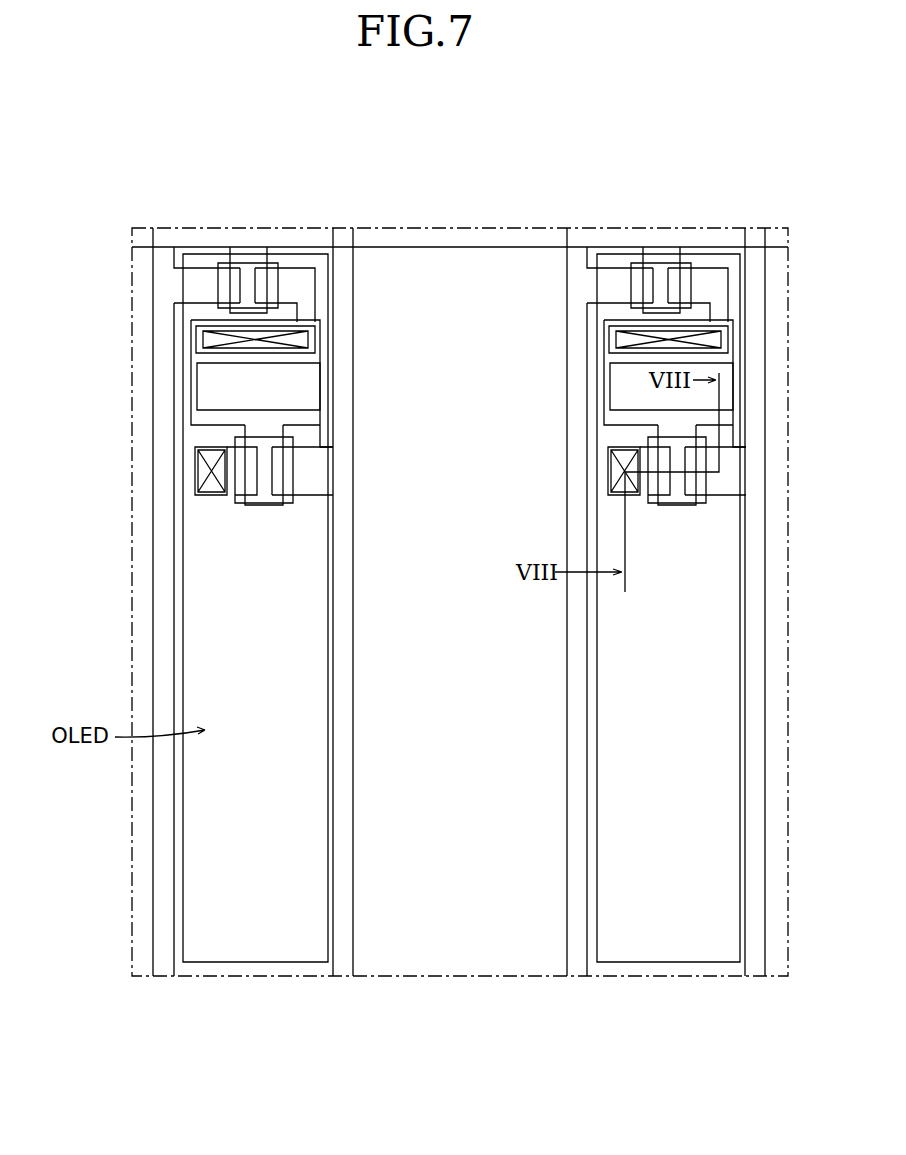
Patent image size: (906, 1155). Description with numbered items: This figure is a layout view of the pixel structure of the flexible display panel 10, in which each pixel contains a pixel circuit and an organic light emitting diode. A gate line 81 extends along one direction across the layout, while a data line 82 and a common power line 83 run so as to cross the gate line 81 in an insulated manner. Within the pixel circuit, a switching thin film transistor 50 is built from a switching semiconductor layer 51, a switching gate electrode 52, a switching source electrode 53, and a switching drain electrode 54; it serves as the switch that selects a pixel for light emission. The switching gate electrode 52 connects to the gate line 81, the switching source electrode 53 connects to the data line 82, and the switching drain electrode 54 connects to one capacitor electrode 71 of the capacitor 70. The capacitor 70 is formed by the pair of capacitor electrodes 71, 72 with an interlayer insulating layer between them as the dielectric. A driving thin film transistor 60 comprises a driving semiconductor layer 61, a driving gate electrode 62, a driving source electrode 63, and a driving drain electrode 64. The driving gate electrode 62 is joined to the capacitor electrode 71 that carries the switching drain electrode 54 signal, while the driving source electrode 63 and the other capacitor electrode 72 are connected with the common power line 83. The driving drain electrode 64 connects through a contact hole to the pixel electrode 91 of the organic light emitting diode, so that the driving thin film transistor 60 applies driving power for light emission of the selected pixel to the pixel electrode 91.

The flexible display panel 10 is at (420, 127).
The switching thin film transistor 50 is at (180, 162).
The switching semiconductor layer 51 is at (257, 265).
The switching gate electrode 52 is at (247, 273).
The switching source electrode 53 is at (197, 268).
The switching drain electrode 54 is at (300, 267).
The driving thin film transistor 60 is at (84, 500).
The driving semiconductor layer 61 is at (245, 510).
The driving gate electrode 62 is at (263, 512).
The driving source electrode 63 is at (308, 495).
The driving drain electrode 64 is at (226, 493).
The capacitor 70 is at (84, 385).
The capacitor electrode 71 is at (190, 420).
The capacitor electrode 72 is at (207, 410).
The gate line 81 is at (140, 235).
The data line 82 is at (165, 334).
The common power line 83 is at (342, 265).
The pixel electrode 91 is at (183, 683).